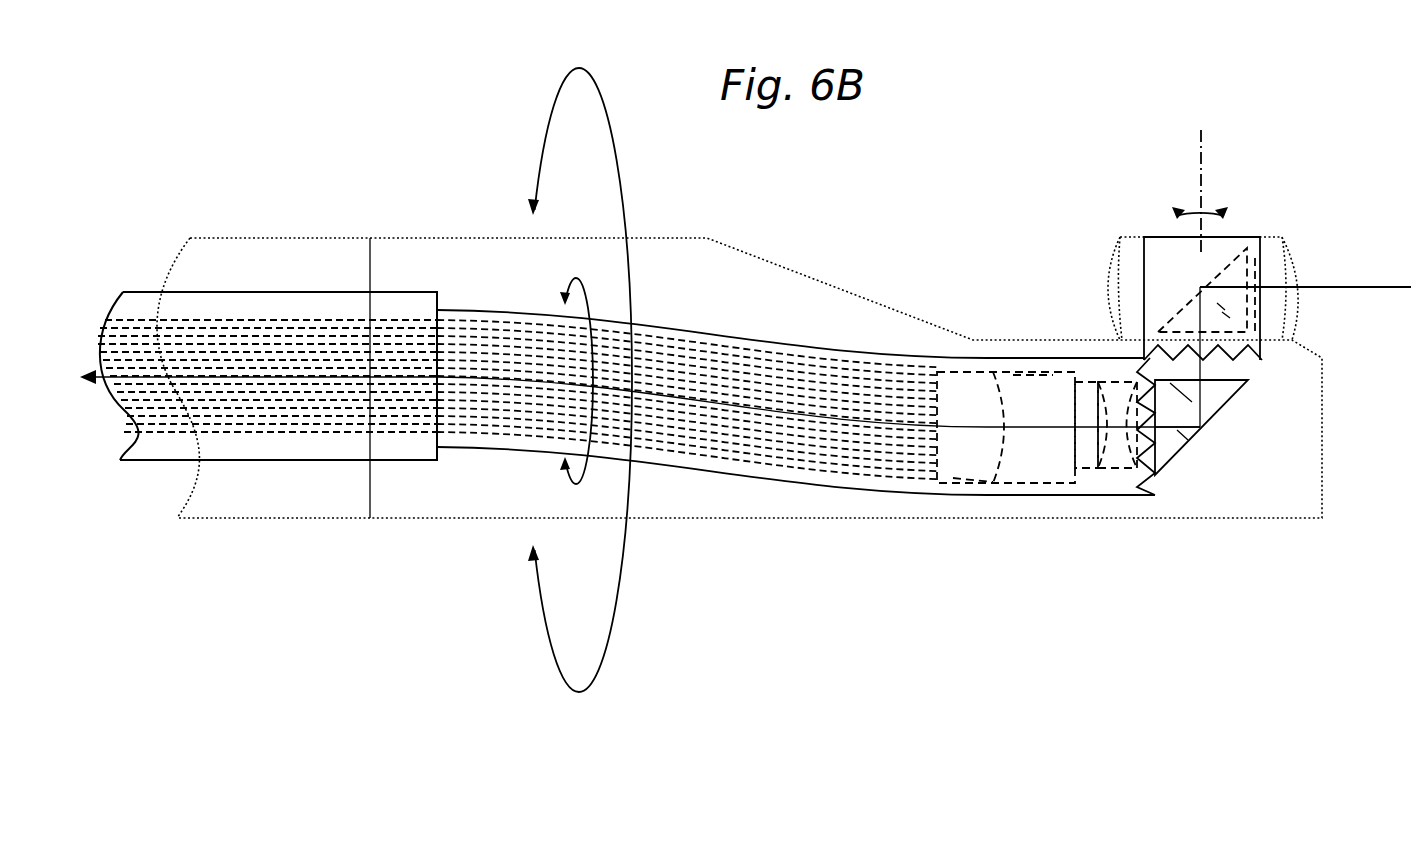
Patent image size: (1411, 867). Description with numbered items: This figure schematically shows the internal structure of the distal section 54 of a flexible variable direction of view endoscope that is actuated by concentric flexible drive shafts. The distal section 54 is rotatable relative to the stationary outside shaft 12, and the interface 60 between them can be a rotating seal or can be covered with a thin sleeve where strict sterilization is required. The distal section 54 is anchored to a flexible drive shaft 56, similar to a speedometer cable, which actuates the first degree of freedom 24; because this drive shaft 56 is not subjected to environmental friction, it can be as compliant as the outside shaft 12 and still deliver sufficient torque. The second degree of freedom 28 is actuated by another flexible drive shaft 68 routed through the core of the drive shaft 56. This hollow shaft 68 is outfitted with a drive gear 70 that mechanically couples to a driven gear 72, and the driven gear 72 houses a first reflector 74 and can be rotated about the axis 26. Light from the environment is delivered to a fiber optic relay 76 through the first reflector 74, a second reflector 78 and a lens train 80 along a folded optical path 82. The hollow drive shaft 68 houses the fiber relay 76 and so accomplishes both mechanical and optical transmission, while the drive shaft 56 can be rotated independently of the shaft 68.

The shaft 12 is at (299, 514).
The first degree of freedom 24 is at (603, 670).
The axis 26 is at (1198, 160).
The second degree of freedom 28 is at (572, 292).
The distal section 54 is at (446, 512).
The flexible drive shaft 56 is at (292, 297).
The interface 60 is at (370, 253).
The flexible drive shaft 68 is at (782, 486).
The drive gear 70 is at (1130, 488).
The driven gear 72 is at (1144, 280).
The first reflector 74 is at (1183, 305).
The fiber optic relay 76 is at (693, 353).
The second reflector 78 is at (1213, 403).
The lens train 80 is at (1033, 493).
The folded optical path 82 is at (1355, 285).